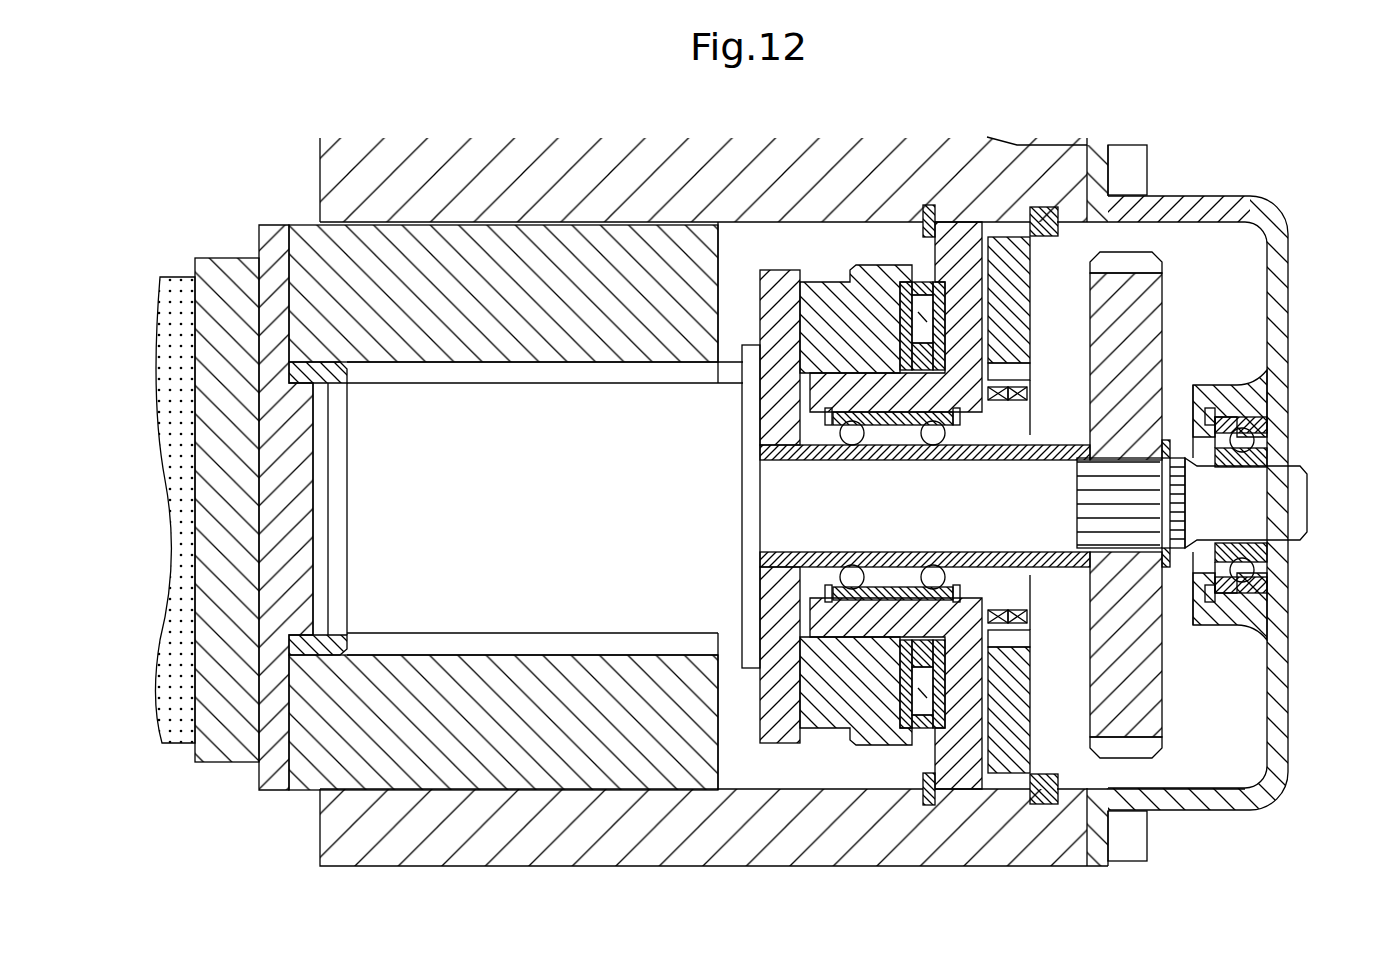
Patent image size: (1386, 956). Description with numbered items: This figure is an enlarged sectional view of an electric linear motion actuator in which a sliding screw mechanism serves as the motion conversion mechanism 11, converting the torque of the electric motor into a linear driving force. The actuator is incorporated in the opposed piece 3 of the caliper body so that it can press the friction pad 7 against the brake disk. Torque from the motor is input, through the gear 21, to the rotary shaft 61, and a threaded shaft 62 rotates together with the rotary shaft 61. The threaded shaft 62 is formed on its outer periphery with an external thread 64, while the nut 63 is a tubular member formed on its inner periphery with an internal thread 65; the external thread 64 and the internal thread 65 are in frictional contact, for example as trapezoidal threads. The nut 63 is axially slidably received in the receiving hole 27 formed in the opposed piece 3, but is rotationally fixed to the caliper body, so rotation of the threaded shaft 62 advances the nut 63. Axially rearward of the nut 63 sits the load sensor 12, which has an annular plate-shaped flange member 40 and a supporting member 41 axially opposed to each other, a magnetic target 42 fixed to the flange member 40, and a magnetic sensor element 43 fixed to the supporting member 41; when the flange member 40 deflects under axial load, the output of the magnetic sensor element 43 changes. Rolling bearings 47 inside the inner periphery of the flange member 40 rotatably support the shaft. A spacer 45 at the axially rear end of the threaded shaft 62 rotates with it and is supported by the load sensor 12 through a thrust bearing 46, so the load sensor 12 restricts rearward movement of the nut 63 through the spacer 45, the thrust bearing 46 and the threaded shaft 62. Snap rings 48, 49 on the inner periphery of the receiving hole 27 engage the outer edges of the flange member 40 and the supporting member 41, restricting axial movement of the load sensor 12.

The opposed piece 3 is at (410, 868).
The friction pad 7 is at (178, 288).
The motion conversion mechanism 11 is at (630, 792).
The load sensor 12 is at (1046, 326).
The gear 21 is at (1165, 663).
The receiving hole 27 is at (520, 772).
The flange member 40 is at (970, 267).
The supporting member 41 is at (1007, 258).
The magnetic target 42 is at (1030, 393).
The magnetic sensor element 43 is at (1032, 375).
The spacer 45 is at (830, 290).
The thrust bearing 46 is at (897, 287).
The rolling bearings 47 is at (928, 437).
The snap ring 48 is at (927, 207).
The snap ring 49 is at (1052, 208).
The rotary shaft 61 is at (1307, 508).
The threaded shaft 62 is at (383, 487).
The nut 63 is at (308, 238).
The external thread 64 is at (405, 377).
The internal thread 65 is at (317, 372).